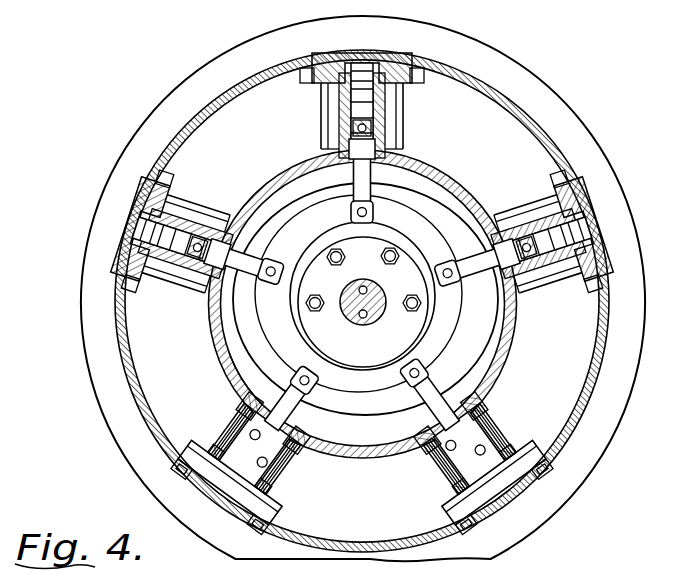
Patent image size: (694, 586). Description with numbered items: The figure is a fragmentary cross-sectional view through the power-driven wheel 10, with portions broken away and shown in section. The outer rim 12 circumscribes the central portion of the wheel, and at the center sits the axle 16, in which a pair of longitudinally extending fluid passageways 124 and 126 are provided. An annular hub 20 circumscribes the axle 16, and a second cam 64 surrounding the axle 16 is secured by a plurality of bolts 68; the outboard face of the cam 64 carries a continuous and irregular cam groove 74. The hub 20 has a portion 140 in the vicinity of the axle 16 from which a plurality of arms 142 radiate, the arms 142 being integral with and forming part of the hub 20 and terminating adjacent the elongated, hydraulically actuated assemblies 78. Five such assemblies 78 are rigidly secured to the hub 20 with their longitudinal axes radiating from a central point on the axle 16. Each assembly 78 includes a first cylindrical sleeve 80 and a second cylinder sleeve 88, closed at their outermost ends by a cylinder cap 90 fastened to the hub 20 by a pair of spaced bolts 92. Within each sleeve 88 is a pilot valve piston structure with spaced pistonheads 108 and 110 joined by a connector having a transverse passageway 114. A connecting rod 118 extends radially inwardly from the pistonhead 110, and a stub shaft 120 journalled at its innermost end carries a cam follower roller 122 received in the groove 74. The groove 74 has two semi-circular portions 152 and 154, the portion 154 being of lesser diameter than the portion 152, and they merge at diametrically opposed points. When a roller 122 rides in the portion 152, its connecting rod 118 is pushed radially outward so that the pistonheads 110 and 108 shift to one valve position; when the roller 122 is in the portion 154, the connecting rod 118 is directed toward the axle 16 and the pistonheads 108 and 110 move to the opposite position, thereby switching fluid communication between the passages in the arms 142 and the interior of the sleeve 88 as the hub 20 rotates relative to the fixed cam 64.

The power-driven wheel 10 is at (632, 196).
The rim 12 is at (645, 292).
The axle 16 is at (380, 313).
The annular hub 20 is at (447, 179).
The second cam 64 is at (230, 350).
The bolts 68 is at (337, 265).
The cam groove 74 is at (428, 238).
The hydraulically actuated assemblies 78 is at (318, 112).
The first cylindrical sleeve 80 is at (240, 425).
The second cylinder sleeve 88 is at (390, 122).
The cylinder cap 90 is at (412, 86).
The bolts 92 is at (504, 415).
The pistonhead 108 is at (330, 96).
The pistonhead 110 is at (378, 134).
The transverse passageway 114 is at (350, 129).
The connecting rod 118 is at (372, 176).
The stub shaft 120 is at (356, 214).
The cam follower roller 122 is at (376, 214).
The fluid passageway 124 is at (363, 285).
The fluid passageway 126 is at (363, 319).
The portion of hub 140 is at (260, 437).
The arms 142 is at (258, 462).
The semi-circular portion of groove 152 is at (253, 318).
The semi-circular portion of groove 154 is at (447, 327).